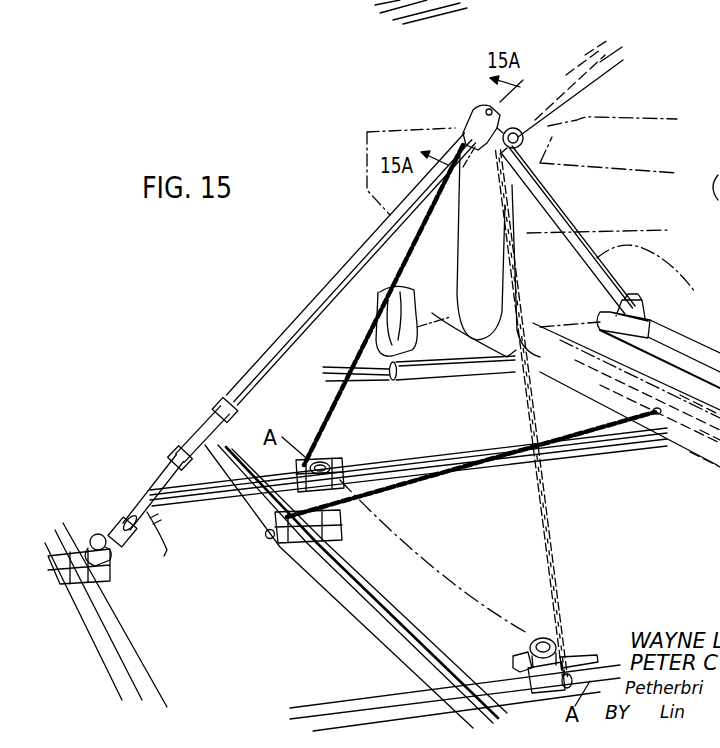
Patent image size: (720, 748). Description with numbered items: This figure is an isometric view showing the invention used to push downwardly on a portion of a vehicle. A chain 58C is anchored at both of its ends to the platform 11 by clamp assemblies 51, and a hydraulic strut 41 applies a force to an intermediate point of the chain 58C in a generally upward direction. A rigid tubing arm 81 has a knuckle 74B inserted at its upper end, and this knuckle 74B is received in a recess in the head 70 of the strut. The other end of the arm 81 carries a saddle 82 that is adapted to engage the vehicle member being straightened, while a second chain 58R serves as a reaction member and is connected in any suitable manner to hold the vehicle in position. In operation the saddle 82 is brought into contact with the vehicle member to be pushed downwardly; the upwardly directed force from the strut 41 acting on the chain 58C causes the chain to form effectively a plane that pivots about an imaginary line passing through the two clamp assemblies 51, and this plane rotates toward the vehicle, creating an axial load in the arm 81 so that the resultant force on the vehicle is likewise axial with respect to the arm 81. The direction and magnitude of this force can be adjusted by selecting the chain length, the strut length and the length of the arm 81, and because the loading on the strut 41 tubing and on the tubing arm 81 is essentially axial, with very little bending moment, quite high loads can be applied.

The platform 11 is at (320, 704).
The strut 41 is at (148, 480).
The clamp assemblies 51 is at (330, 465).
The chain 58C is at (342, 394).
The chain 58R is at (441, 483).
The head 70 is at (477, 110).
The knuckle 74B is at (520, 130).
The rigid tubing arm 81 is at (585, 253).
The saddle 82 is at (646, 318).